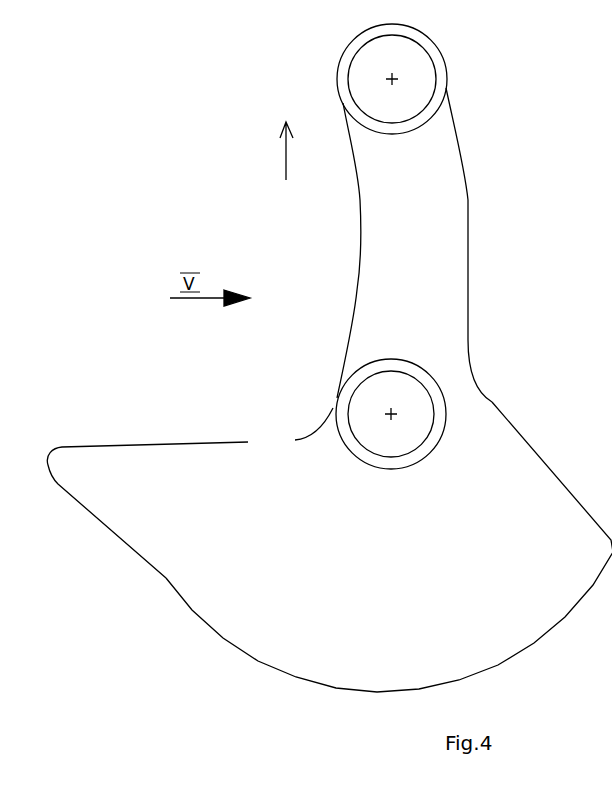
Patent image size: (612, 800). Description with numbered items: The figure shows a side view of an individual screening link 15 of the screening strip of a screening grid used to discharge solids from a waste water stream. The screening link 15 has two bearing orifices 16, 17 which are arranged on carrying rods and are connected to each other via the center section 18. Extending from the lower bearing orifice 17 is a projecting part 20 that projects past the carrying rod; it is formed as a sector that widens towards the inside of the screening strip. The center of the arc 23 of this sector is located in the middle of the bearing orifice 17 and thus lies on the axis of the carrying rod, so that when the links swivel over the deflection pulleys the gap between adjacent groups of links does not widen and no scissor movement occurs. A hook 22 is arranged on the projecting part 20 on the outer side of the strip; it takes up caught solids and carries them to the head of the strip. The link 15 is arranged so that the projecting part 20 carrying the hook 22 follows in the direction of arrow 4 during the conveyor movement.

The arrow 4 is at (285, 154).
The screening link 15 is at (487, 443).
The bearing orifice 16 is at (443, 77).
The bearing orifice 17 is at (418, 370).
The center section 18 is at (442, 190).
The projecting part 20 is at (332, 652).
The hook 22 is at (157, 533).
The center of the arc 23 is at (386, 412).